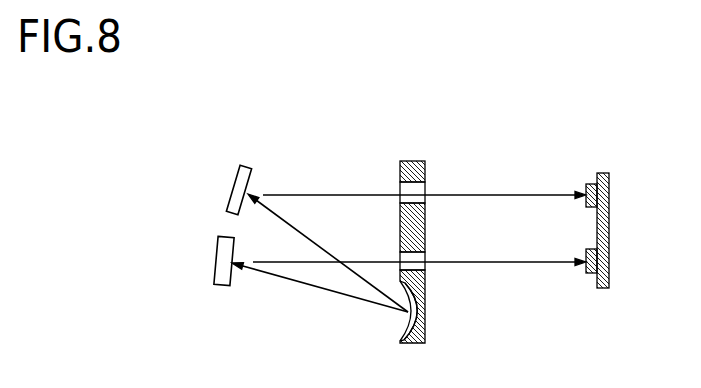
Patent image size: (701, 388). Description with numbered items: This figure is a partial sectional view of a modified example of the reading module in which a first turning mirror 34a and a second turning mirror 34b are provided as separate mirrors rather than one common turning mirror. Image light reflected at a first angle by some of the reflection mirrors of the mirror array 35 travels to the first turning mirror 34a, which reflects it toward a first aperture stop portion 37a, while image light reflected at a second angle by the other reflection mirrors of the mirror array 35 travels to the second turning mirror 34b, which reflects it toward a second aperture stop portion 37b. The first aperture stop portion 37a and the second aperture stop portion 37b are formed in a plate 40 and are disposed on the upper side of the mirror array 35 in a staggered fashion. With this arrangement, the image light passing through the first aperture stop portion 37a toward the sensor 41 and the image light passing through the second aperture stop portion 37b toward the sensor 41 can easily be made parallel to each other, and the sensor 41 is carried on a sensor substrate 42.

The first turning mirror 34a is at (234, 189).
The second turning mirror 34b is at (218, 262).
The mirror array 35 is at (427, 316).
The first aperture stop portion 37a is at (426, 200).
The second aperture stop portion 37b is at (426, 265).
The light shielding plate 40 is at (469, 244).
The sensor 41 is at (590, 274).
The sensor substrate 42 is at (610, 228).